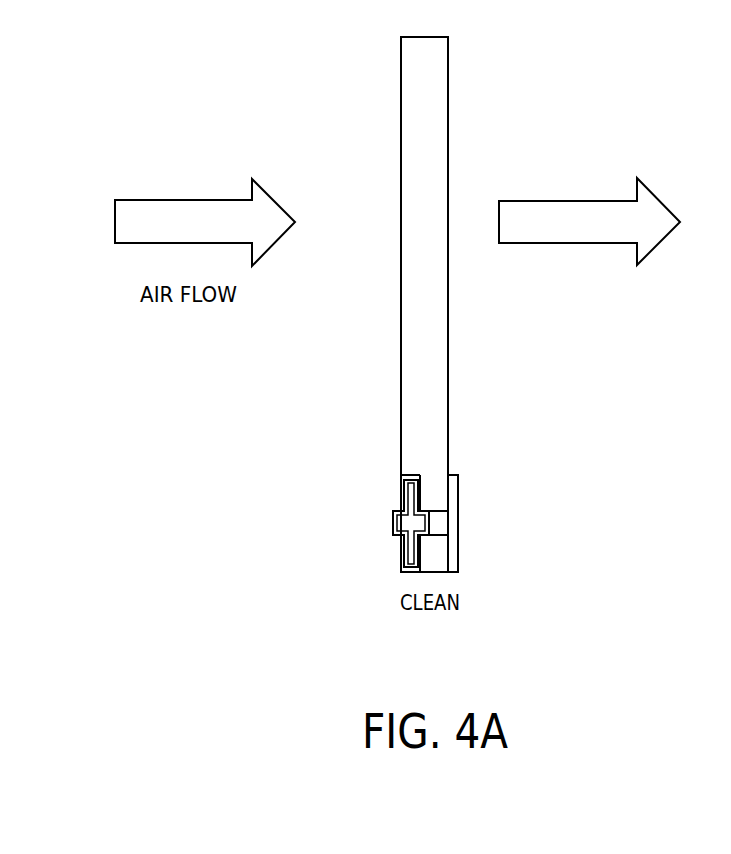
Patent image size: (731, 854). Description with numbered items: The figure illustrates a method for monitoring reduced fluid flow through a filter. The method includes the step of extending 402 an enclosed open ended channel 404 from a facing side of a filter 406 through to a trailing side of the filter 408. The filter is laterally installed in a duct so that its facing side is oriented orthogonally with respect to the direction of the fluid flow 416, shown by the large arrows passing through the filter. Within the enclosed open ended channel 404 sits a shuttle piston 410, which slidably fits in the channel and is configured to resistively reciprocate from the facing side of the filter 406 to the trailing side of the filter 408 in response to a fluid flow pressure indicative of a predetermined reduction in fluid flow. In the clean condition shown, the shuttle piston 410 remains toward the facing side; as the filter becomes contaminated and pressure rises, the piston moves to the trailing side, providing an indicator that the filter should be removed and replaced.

The extending step 402 is at (432, 490).
The enclosed open ended channel 404 is at (438, 530).
The facing side of filter 406 is at (400, 333).
The trailing side of filter 408 is at (450, 362).
The shuttle piston 410 is at (395, 522).
The direction of fluid flow 416 is at (155, 190).